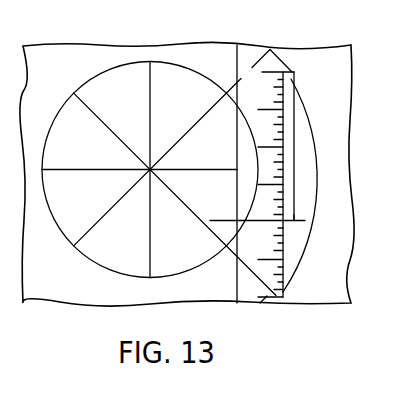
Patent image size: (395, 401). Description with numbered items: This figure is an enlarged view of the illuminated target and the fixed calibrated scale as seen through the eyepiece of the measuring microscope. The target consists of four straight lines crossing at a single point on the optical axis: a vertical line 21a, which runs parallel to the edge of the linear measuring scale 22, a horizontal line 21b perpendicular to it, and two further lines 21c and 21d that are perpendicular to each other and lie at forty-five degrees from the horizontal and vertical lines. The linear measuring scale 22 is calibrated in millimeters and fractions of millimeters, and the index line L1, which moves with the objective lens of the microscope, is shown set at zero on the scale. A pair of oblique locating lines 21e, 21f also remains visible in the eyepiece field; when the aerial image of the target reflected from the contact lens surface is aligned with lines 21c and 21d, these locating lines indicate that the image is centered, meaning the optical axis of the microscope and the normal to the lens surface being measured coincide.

The vertical line 21a is at (153, 117).
The horizontal line 21b is at (178, 170).
The oblique target line 21c is at (102, 120).
The oblique target line 21d is at (203, 118).
The oblique locating line 21e is at (233, 258).
The oblique locating line 21f is at (227, 88).
The linear measuring scale 22 is at (267, 264).
The index line L1 is at (288, 220).